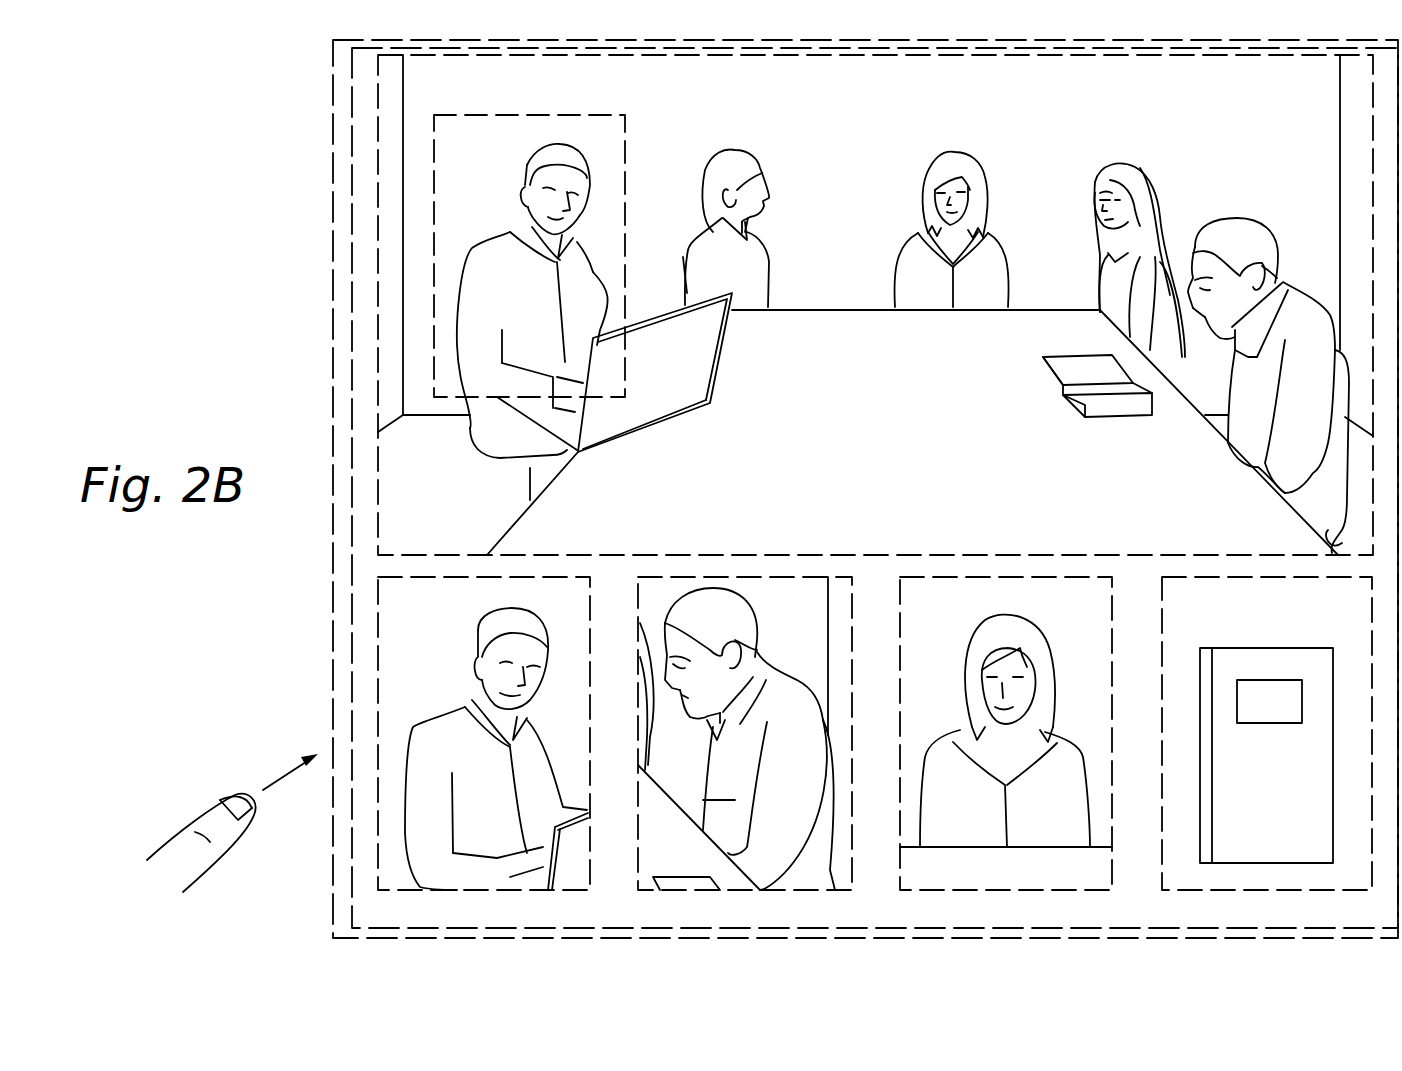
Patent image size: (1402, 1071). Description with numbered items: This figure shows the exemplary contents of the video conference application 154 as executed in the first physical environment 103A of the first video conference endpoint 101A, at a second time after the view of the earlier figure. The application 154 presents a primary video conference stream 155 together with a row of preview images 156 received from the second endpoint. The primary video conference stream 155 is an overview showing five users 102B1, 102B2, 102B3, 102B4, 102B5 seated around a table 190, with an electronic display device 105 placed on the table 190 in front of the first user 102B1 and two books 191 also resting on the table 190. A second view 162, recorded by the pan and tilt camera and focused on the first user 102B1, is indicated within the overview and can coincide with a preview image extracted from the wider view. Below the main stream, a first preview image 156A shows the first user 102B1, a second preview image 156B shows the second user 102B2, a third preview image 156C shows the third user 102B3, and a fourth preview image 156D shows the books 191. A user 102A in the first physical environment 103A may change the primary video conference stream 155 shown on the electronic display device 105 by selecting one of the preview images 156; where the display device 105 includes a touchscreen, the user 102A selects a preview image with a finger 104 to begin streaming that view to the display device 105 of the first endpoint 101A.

The first video conference endpoint 101A is at (160, 101).
The first physical environment 103A is at (196, 180).
The video conference application 154 is at (348, 71).
The primary video conference stream 155 is at (378, 198).
The electronic display device 105 is at (326, 378).
The preview images 156 is at (350, 603).
The first preview image 156A is at (482, 892).
The second preview image 156B is at (745, 892).
The third preview image 156C is at (1005, 892).
The fourth preview image 156D is at (1265, 892).
The second view 162 is at (500, 115).
The user 102A is at (184, 823).
The finger 104 is at (201, 824).
The first user 102B1 is at (548, 158).
The second user 102B2 is at (1237, 218).
The third user 102B3 is at (950, 152).
The fourth user 102B4 is at (732, 150).
The fifth user 102B5 is at (1121, 162).
The table 190 is at (520, 535).
The books 191 is at (1042, 365).